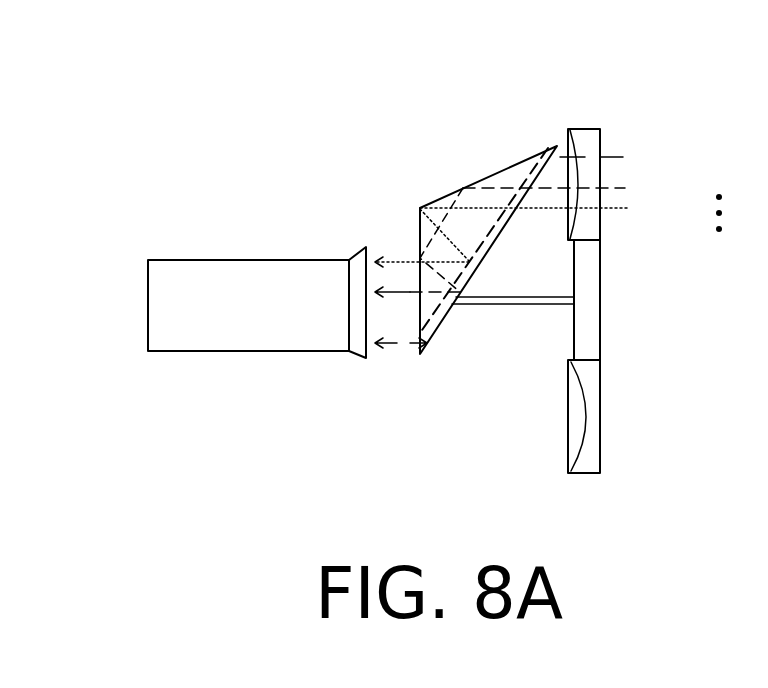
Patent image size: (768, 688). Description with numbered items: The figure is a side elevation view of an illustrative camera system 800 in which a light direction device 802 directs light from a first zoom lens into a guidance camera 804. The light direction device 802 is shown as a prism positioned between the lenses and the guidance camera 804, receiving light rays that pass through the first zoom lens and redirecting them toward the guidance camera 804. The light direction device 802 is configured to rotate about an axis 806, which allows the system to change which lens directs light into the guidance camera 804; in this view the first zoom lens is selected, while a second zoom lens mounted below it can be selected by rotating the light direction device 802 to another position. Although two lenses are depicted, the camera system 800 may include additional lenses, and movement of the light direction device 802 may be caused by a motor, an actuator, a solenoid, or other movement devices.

The camera system 800 is at (307, 74).
The light direction device 802 is at (509, 166).
The guidance camera 804 is at (183, 260).
The axis 806 is at (525, 305).